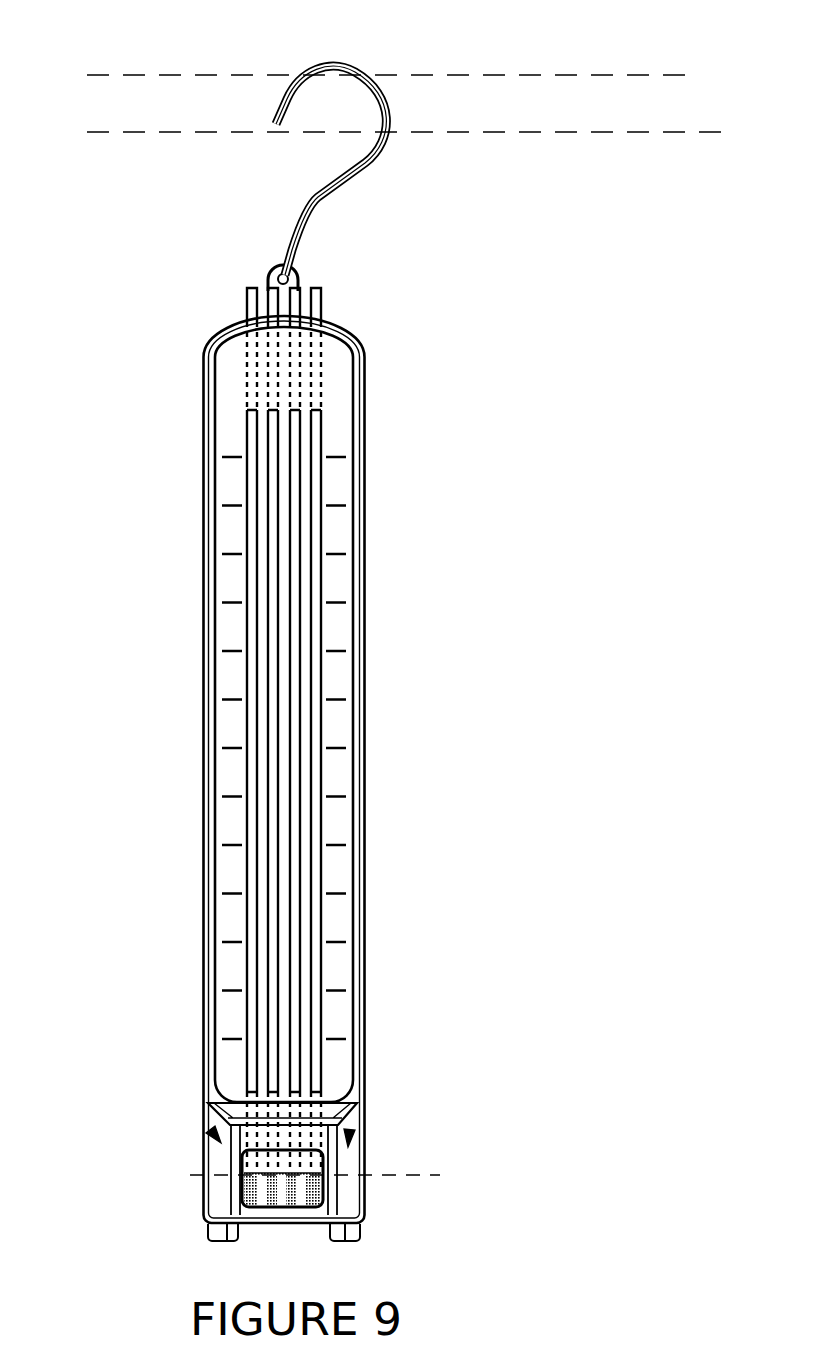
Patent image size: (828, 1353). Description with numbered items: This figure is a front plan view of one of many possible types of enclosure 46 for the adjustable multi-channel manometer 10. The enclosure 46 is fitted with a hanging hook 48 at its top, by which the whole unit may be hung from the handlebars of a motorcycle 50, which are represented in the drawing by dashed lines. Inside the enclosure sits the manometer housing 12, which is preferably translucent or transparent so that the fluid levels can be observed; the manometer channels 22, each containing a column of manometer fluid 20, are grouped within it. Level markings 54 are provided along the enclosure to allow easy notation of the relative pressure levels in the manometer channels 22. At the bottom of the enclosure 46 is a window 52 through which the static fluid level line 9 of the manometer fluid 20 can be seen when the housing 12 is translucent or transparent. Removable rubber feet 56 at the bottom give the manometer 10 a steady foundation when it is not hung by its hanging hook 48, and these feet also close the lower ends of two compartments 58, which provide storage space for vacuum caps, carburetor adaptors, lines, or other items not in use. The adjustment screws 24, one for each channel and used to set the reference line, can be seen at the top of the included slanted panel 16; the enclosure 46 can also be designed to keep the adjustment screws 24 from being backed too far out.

The static fluid level line 9 is at (402, 1175).
The manometer 10 is at (171, 458).
The housing 12 is at (363, 901).
The slanted panel 16 is at (333, 1110).
The manometer fluid 20 is at (322, 1189).
The manometer channels 22 is at (250, 728).
The adjustment screws 24 is at (235, 1108).
The enclosure 46 is at (206, 282).
The hanging hook 48 is at (380, 158).
The motorcycle handlebars 50 is at (462, 114).
The window 52 is at (243, 1156).
The level markings 54 is at (333, 650).
The rubber feet 56 is at (218, 1242).
The compartments 58 is at (207, 1130).